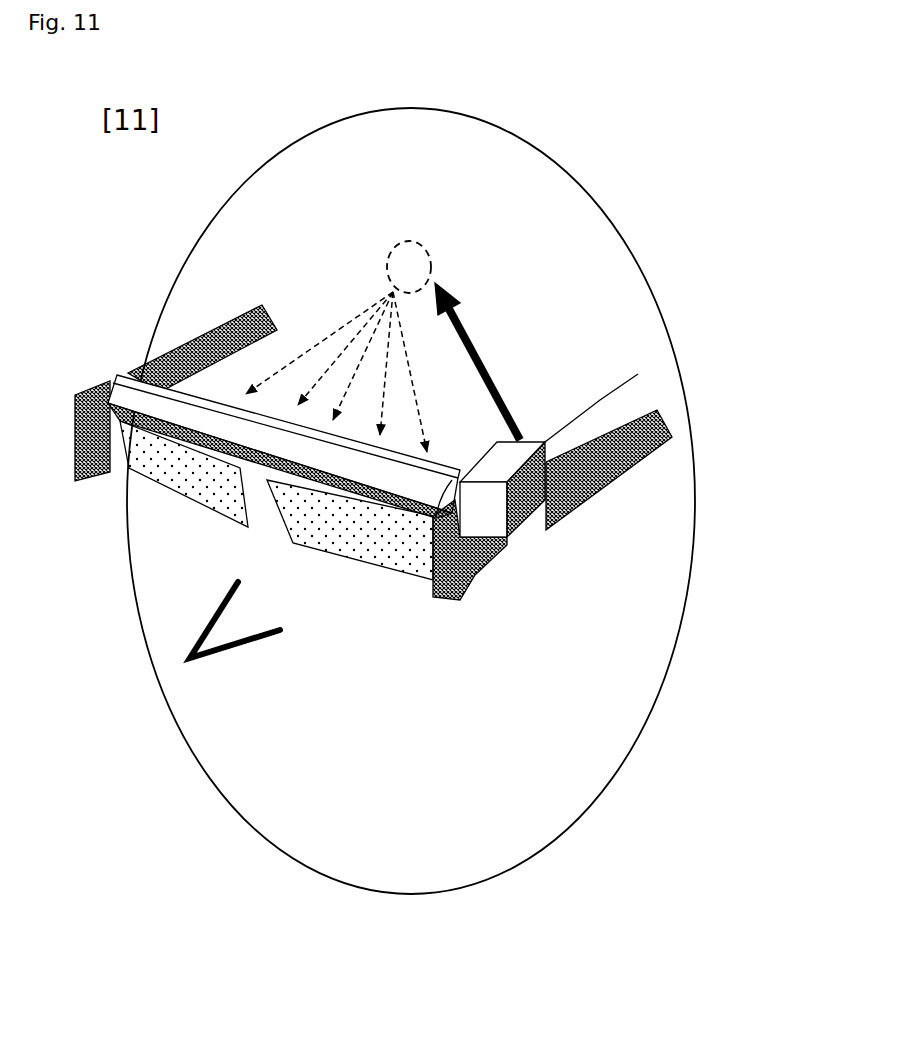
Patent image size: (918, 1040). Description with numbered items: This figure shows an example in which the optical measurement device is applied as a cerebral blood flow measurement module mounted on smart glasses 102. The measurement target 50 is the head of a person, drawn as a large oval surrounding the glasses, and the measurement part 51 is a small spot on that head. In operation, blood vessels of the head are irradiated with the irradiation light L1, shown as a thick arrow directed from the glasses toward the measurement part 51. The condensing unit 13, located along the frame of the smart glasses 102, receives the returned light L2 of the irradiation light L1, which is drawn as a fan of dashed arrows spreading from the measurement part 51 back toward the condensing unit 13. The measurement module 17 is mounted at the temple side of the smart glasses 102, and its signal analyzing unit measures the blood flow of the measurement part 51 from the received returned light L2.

The condensing unit 13 is at (176, 383).
The measurement module 17 is at (654, 416).
The measurement target 50 is at (411, 501).
The measurement part 51 is at (456, 250).
The smart glasses 102 is at (699, 514).
The irradiation light L1 is at (507, 361).
The returned light L2 is at (336, 358).